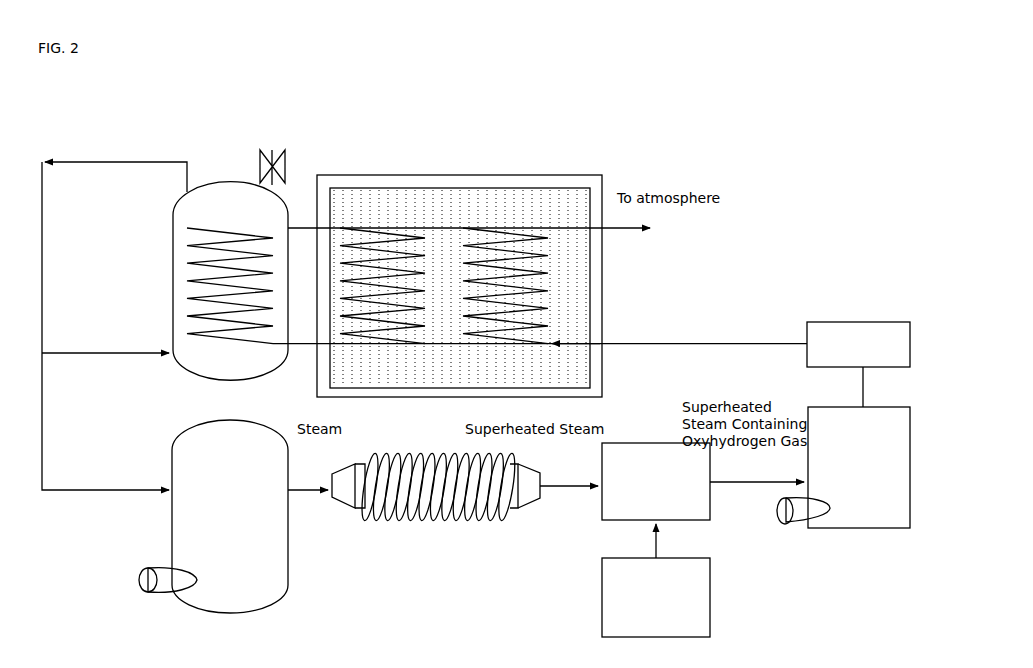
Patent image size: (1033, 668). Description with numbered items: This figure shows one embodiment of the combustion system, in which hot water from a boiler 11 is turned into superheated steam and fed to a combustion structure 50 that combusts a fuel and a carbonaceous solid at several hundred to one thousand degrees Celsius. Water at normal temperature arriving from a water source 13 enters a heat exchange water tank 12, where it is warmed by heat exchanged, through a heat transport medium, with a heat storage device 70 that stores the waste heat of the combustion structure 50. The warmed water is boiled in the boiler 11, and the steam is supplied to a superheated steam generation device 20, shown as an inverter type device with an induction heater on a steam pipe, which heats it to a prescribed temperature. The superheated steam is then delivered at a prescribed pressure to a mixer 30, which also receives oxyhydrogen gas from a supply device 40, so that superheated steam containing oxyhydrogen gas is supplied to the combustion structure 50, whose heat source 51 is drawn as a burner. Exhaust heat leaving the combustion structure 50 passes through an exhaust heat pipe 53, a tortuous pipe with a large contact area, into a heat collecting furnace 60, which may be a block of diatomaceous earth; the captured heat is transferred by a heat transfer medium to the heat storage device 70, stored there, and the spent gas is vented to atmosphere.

The boiler 11 is at (176, 371).
The heat exchange water tank 12 is at (178, 258).
The water source 13 is at (105, 335).
The superheated steam generation device 20 is at (436, 515).
The mixer 30 is at (656, 481).
The oxyhydrogen gas supply device 40 is at (656, 580).
The combustion structure 50 is at (859, 467).
The heat source (burner) 51 is at (814, 542).
The exhaust heat pipe 53 is at (779, 387).
The heat collecting furnace 60 is at (857, 344).
The heat storage device 70 is at (367, 200).